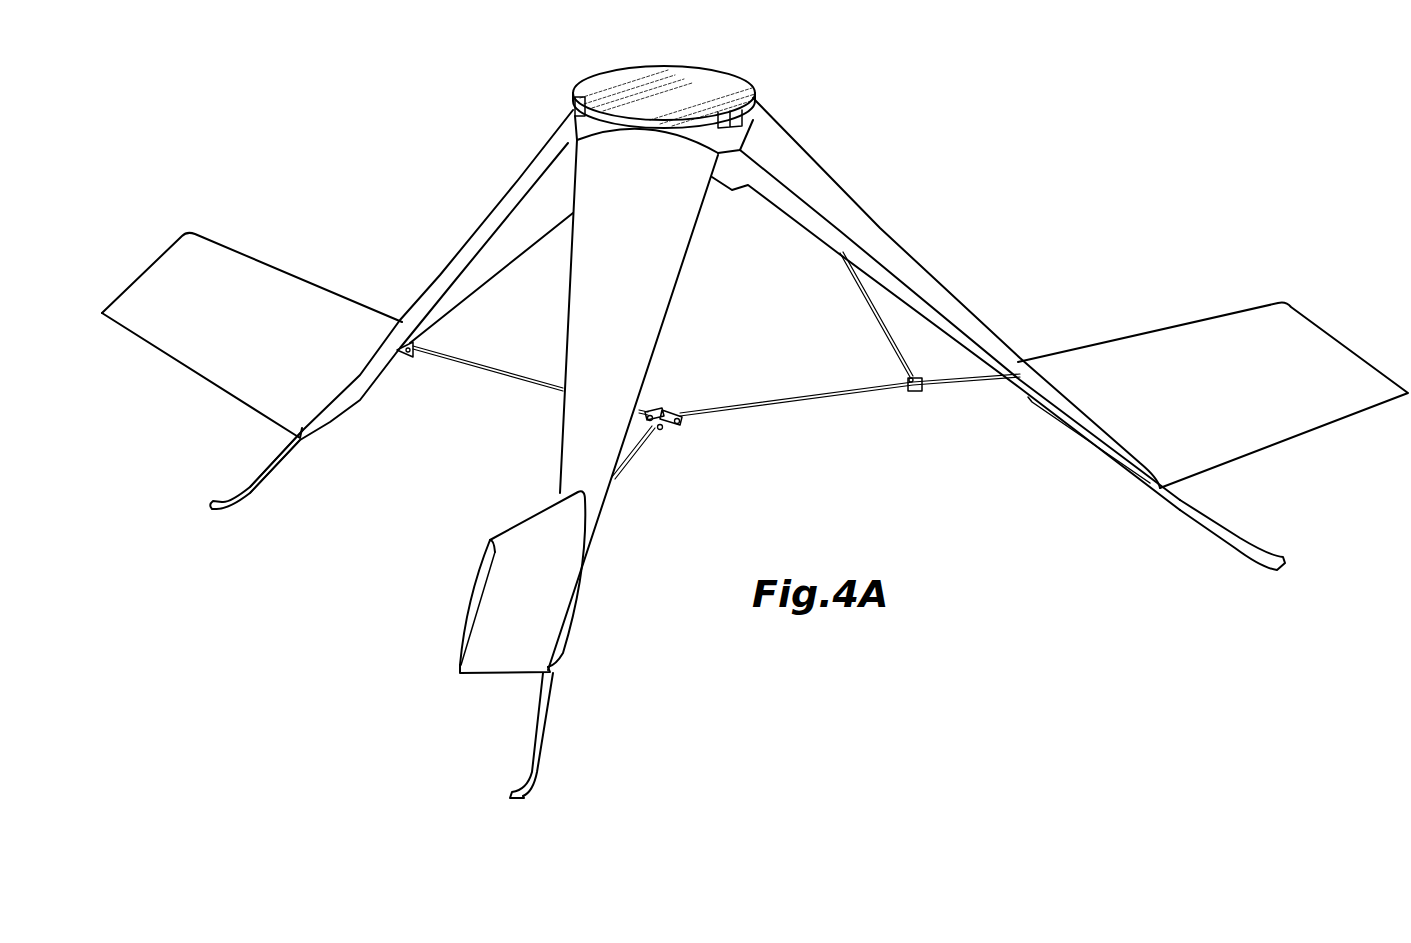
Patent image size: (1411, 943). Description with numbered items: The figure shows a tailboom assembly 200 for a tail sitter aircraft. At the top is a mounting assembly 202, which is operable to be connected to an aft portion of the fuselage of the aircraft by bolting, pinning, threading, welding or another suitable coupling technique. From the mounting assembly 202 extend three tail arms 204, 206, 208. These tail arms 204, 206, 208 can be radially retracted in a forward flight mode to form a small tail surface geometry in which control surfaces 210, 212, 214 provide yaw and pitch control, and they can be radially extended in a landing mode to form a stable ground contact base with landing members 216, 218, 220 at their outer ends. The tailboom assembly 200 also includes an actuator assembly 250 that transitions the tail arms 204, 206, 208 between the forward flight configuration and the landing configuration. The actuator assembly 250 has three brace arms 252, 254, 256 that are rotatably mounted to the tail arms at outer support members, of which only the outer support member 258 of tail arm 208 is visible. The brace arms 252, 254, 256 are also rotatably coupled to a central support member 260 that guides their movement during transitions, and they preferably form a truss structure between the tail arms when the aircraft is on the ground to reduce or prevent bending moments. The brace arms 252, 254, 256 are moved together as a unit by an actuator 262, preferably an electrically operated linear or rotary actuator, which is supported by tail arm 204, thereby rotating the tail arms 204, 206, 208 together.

The tailboom assembly 200 is at (952, 232).
The mounting assembly 202 is at (750, 72).
The tail arm 204 is at (817, 167).
The tail arm 206 is at (570, 423).
The tail arm 208 is at (518, 184).
The control surface 210 is at (1295, 417).
The control surface 212 is at (523, 537).
The control surface 214 is at (203, 345).
The landing member 216 is at (1223, 547).
The landing member 218 is at (528, 753).
The landing member 220 is at (262, 496).
The actuator assembly 250 is at (878, 344).
The brace arm 252 is at (835, 398).
The brace arm 254 is at (637, 452).
The brace arm 256 is at (508, 373).
The outer support member 258 is at (412, 358).
The central support member 260 is at (662, 412).
The actuator 262 is at (858, 290).